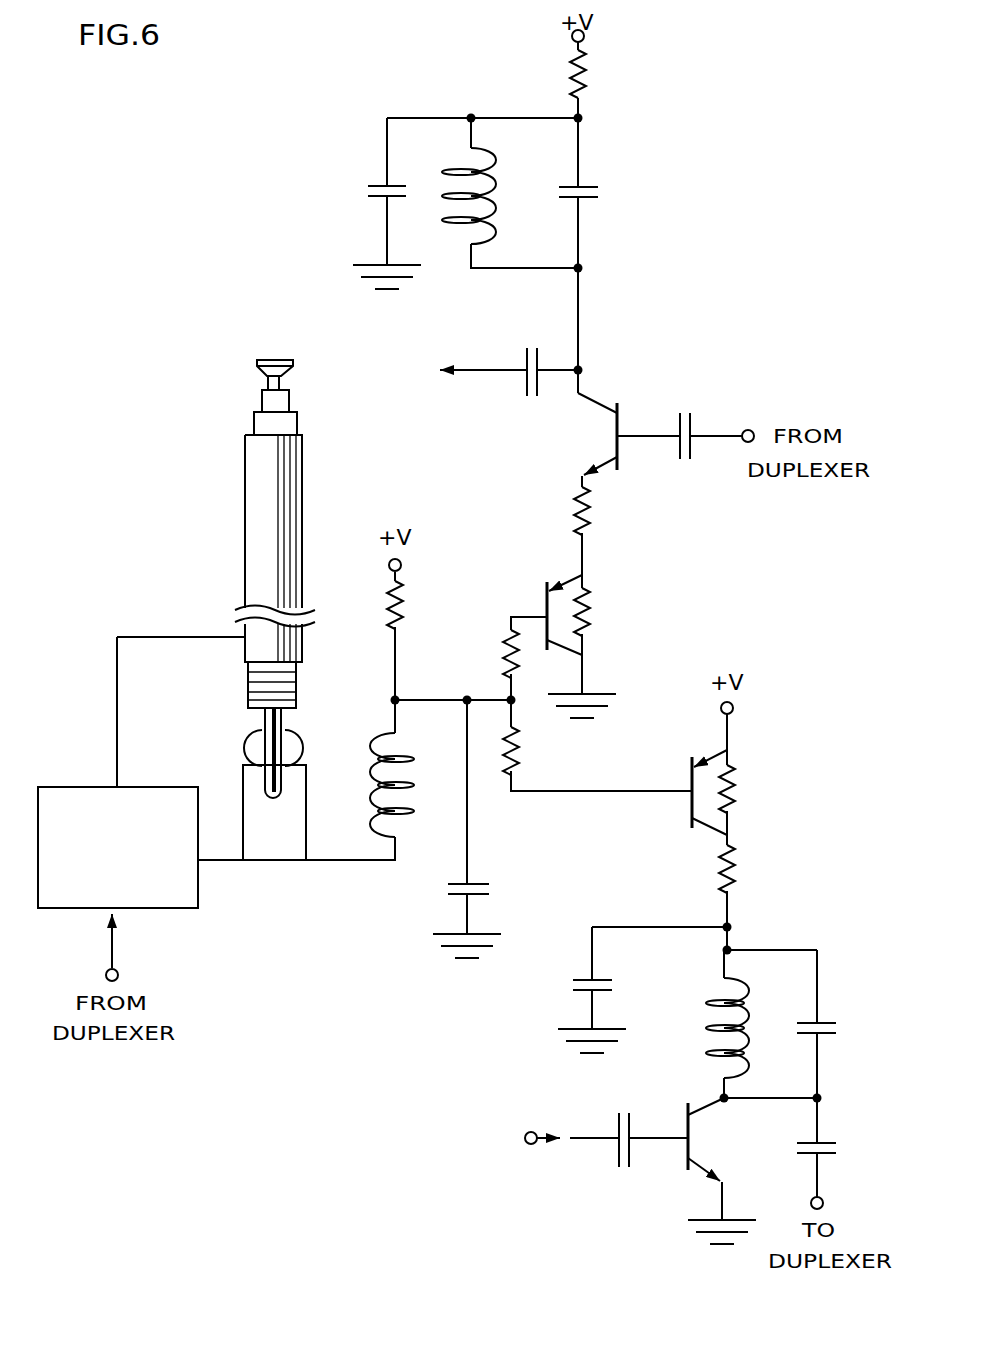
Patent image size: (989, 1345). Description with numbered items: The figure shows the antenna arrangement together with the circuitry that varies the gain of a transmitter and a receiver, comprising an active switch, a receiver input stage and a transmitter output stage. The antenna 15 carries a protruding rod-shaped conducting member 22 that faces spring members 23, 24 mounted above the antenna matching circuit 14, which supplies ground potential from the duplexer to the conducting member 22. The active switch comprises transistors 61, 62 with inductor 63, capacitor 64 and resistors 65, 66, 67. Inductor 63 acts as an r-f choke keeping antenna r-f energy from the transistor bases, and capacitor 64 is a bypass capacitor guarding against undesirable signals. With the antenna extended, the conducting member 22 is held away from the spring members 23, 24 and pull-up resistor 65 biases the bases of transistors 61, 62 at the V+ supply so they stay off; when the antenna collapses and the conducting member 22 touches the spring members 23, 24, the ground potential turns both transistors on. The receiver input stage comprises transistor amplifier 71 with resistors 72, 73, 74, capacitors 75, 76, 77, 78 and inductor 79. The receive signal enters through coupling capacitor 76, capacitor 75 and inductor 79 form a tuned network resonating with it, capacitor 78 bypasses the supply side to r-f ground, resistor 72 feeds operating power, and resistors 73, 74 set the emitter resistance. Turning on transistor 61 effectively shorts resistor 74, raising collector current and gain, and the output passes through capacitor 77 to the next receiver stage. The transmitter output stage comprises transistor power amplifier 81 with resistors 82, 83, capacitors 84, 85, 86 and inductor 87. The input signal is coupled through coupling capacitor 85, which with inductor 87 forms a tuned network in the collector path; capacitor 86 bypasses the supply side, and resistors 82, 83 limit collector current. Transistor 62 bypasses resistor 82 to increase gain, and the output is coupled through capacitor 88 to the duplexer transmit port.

The antenna matching circuit 14 is at (64, 787).
The antenna 15 is at (245, 545).
The conducting member 22 is at (283, 722).
The spring member 23 is at (306, 766).
The spring member 24 is at (243, 790).
The transistor 61 is at (547, 590).
The transistor 62 is at (690, 770).
The inductor 63 is at (402, 756).
The capacitor 64 is at (455, 884).
The pull-up resistor 65 is at (388, 598).
The resistor 66 is at (505, 630).
The resistor 67 is at (518, 762).
The transistor amplifier 71 is at (606, 460).
The resistor 72 is at (565, 78).
The resistor 73 is at (572, 505).
The resistor 74 is at (590, 606).
The capacitor 75 is at (566, 187).
The coupling capacitor 76 is at (680, 413).
The capacitor 77 is at (522, 352).
The capacitor 78 is at (372, 186).
The inductor 79 is at (458, 172).
The transistor power amplifier 81 is at (688, 1108).
The resistor 82 is at (734, 788).
The resistor 83 is at (716, 878).
The capacitor 84 is at (805, 1020).
The coupling capacitor 85 is at (615, 1122).
The capacitor 86 is at (580, 978).
The inductor 87 is at (715, 1004).
The capacitor 88 is at (798, 1143).